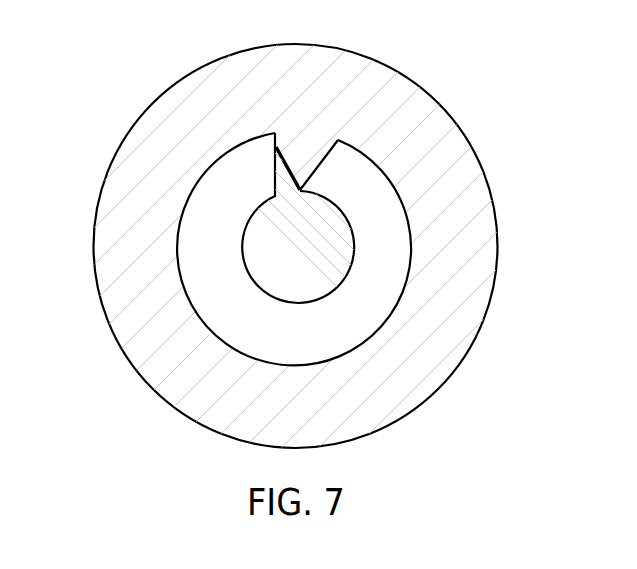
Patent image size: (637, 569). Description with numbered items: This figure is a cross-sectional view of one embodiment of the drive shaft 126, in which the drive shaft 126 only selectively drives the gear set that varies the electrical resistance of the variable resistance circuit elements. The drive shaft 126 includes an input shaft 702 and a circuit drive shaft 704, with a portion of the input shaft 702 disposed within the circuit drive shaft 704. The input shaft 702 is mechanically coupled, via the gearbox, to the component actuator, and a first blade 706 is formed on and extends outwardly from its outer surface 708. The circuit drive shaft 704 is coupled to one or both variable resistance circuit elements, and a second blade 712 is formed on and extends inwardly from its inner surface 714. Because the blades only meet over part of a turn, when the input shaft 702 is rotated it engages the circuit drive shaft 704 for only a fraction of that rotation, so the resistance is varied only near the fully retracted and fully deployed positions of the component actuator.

The drive shaft 126 is at (270, 235).
The circuit drive shaft 704 is at (318, 284).
The input shaft 702 is at (352, 230).
The first blade 706 is at (273, 176).
The second blade 712 is at (323, 165).
The outer surface 708 is at (290, 303).
The inner surface 714 is at (370, 336).